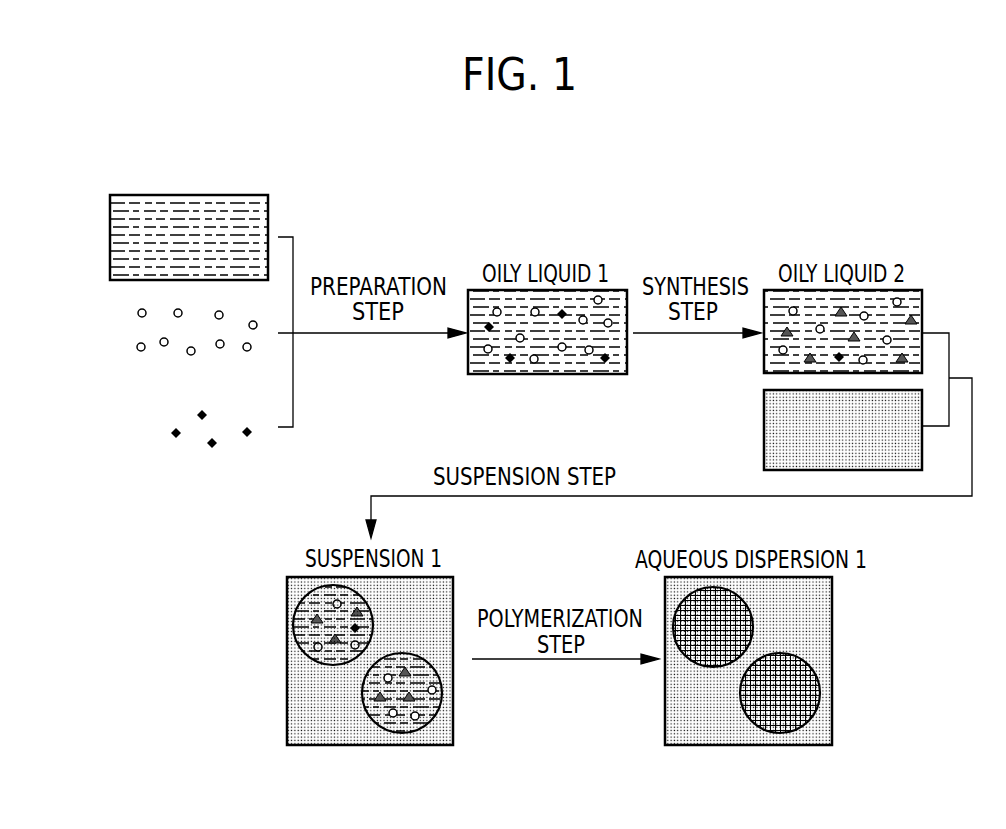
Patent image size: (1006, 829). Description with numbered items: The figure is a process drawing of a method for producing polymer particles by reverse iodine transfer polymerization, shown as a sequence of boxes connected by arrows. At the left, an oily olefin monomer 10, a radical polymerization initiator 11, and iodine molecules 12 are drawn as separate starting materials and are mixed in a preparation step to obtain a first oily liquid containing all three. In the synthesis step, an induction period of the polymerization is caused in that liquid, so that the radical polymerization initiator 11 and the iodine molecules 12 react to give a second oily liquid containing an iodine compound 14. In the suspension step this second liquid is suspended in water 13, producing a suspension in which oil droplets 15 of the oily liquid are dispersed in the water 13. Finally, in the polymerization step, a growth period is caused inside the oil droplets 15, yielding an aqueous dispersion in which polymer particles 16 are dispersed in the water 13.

The oily olefin monomer 10 is at (103, 195).
The radical polymerization initiator 11 is at (128, 305).
The iodine molecules 12 is at (155, 400).
The water 13 is at (760, 387).
The iodine compound 14 is at (916, 317).
The oil droplets 15 is at (443, 652).
The polymer particles 16 is at (821, 653).